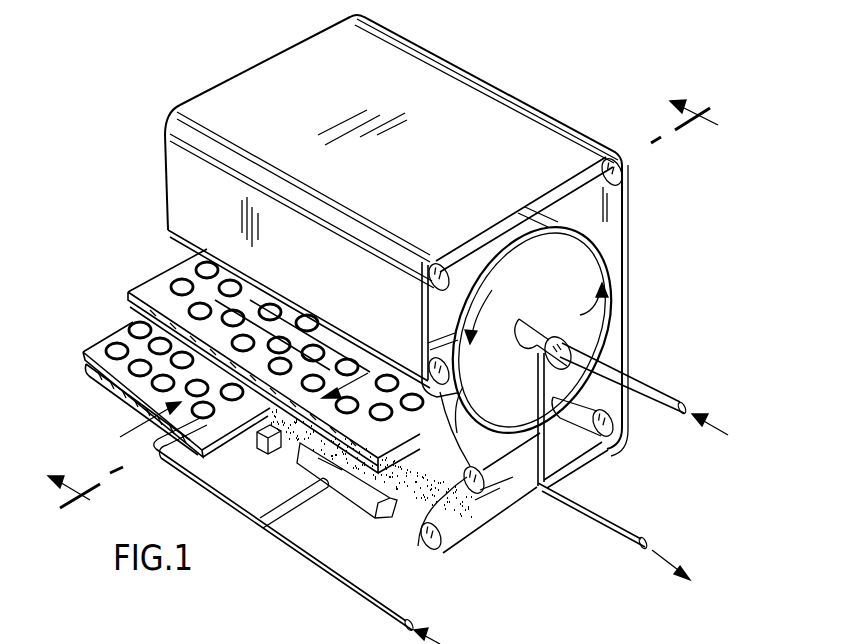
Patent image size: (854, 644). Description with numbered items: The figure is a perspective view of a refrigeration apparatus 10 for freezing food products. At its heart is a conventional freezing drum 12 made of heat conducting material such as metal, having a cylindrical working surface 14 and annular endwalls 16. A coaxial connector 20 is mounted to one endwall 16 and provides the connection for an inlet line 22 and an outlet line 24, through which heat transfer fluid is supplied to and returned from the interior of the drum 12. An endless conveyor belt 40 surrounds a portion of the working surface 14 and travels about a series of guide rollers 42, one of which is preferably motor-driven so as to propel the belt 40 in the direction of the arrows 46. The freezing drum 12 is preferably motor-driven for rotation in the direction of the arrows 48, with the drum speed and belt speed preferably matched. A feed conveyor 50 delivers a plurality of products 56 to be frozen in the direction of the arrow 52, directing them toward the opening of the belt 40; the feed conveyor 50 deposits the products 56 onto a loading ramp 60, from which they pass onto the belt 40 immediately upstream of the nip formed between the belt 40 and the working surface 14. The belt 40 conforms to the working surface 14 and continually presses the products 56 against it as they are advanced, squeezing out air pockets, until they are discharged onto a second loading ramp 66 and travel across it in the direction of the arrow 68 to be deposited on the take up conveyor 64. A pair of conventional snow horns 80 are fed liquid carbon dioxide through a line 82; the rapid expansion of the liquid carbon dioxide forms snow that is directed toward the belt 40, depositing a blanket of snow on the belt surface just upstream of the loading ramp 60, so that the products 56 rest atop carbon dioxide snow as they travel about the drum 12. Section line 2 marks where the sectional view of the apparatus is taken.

The refrigeration apparatus 10 is at (478, 62).
The freezing drum 12 is at (593, 253).
The cylindrical working surface 14 is at (458, 405).
The annular endwalls 16 is at (573, 250).
The coaxial connector 20 is at (540, 330).
The inlet line 22 is at (658, 388).
The outlet line 24 is at (597, 510).
The endless conveyor belt 40 is at (532, 128).
The guide rollers 42 is at (620, 195).
The arrows indicating belt travel direction 46 is at (527, 192).
The arrows indicating drum rotation direction 48 is at (492, 313).
The feed conveyor 50 is at (88, 368).
The arrow indicating feed direction 52 is at (118, 437).
The products 56 is at (110, 345).
The loading ramp 60 is at (455, 417).
The take up conveyor 64 is at (150, 288).
The loading ramp 66 is at (255, 302).
The arrow indicating discharge direction 68 is at (368, 373).
The snow horns 80 is at (272, 450).
The liquid carbon dioxide line 82 is at (370, 593).
The section line 2- 2 is at (375, 295).